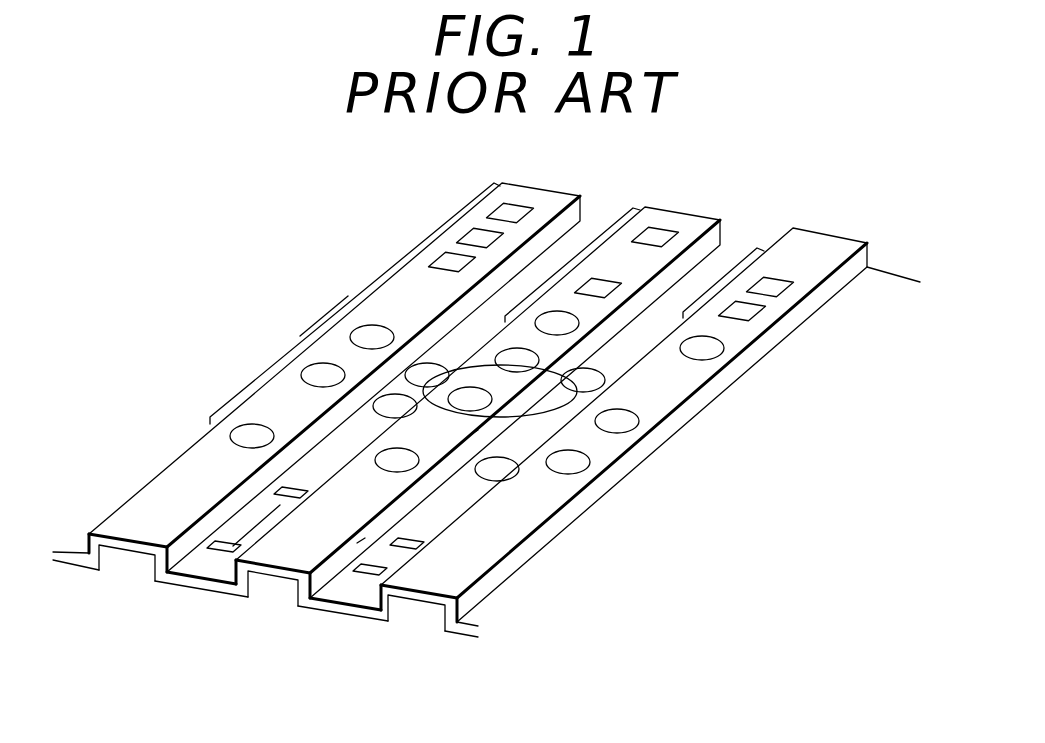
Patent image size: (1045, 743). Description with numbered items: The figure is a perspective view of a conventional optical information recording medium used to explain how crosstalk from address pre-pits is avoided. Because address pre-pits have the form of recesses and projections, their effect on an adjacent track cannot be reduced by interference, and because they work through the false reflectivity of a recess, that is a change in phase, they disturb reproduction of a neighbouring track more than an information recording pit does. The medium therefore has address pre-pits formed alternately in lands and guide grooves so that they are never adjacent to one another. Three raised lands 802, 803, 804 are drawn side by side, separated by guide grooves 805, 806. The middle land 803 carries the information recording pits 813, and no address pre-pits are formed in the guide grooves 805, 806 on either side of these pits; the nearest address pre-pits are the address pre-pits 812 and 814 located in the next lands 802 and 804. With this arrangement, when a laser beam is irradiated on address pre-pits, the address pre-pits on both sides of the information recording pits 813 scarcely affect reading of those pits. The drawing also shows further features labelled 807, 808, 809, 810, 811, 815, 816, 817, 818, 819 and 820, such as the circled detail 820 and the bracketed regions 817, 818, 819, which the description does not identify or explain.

The land 802 is at (537, 186).
The land 803 is at (678, 207).
The land 804 is at (827, 235).
The first groove 805 is at (202, 573).
The second groove 806 is at (345, 602).
The thin film strip 807 is at (304, 340).
The round holes of first bar 808 is at (395, 394).
The round holes of second bar 809 is at (468, 364).
The strip in second groove 810 is at (468, 432).
The round holes of third bar 811 is at (762, 359).
The address pre-pits 812 is at (467, 203).
The information recording pits 813 is at (585, 248).
The address pre-pits 814 is at (713, 283).
The strip in first groove 815 is at (245, 492).
The pad in second groove 816 is at (360, 545).
The middle region 817 is at (655, 524).
The end region 818 is at (835, 366).
The front region 819 is at (509, 653).
The enlarged region 820 is at (455, 372).